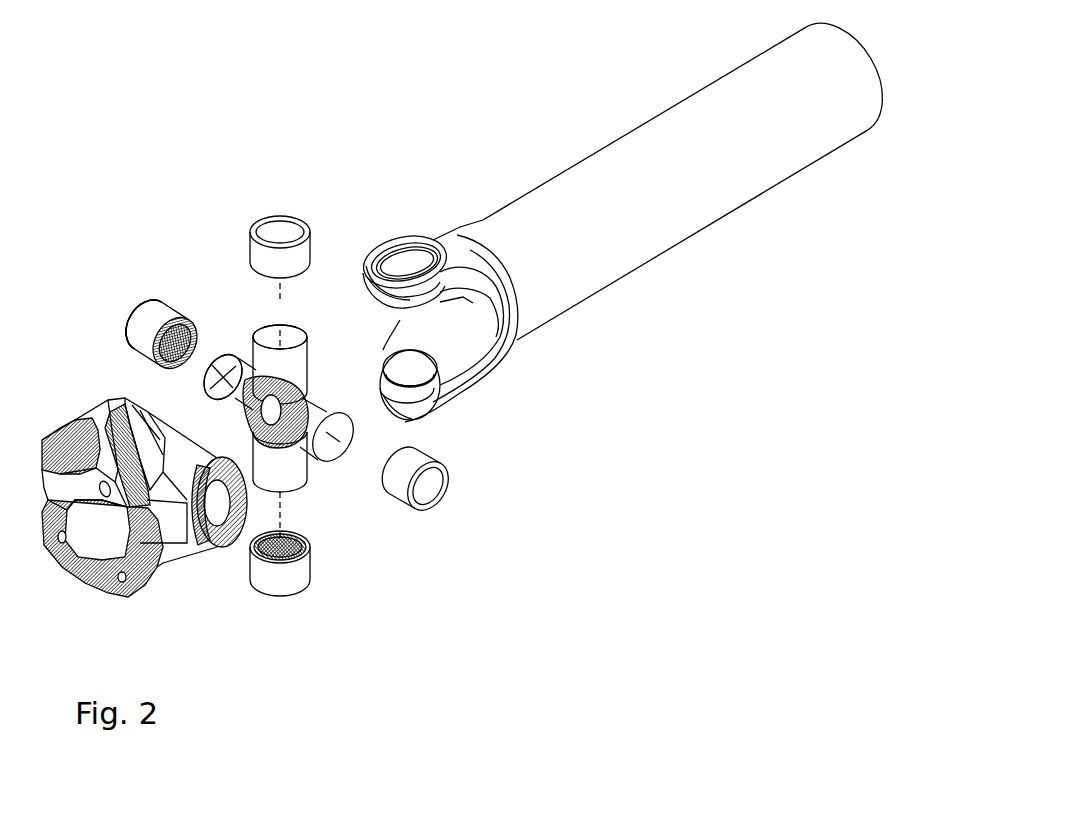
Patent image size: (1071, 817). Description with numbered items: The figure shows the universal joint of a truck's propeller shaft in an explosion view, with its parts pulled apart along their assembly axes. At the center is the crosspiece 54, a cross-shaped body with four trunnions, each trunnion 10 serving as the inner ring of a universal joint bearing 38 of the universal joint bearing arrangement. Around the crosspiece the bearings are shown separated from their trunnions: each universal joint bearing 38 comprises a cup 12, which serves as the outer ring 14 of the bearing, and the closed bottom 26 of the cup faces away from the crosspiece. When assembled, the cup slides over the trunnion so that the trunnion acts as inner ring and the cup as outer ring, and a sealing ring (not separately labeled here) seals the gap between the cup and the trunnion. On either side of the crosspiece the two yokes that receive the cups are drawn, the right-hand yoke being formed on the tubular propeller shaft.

The trunnion 10 is at (269, 411).
The cup 12 is at (143, 337).
The outer ring 14 is at (104, 303).
The bottom of the cup 26 is at (128, 333).
The universal joint bearing 38 is at (232, 363).
The crosspiece 54 is at (302, 318).